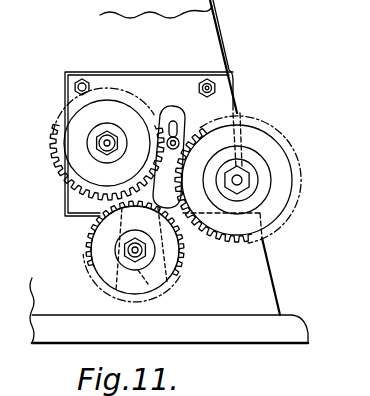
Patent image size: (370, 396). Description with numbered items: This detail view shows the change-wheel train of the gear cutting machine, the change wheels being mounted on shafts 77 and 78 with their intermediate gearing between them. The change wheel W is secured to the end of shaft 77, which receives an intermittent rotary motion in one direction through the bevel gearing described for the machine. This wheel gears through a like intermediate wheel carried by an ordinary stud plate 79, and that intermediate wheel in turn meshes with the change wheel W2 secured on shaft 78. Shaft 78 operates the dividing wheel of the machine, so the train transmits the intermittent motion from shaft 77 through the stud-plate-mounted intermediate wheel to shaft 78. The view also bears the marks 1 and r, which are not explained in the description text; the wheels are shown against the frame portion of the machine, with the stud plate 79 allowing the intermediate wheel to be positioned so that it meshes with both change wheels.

The machine frame 1 is at (248, 283).
The shaft 77 is at (95, 150).
The shaft 78 is at (245, 173).
The stud plate 79 is at (171, 110).
The pitch radius r is at (55, 126).
The change wheel W² W2 is at (303, 173).